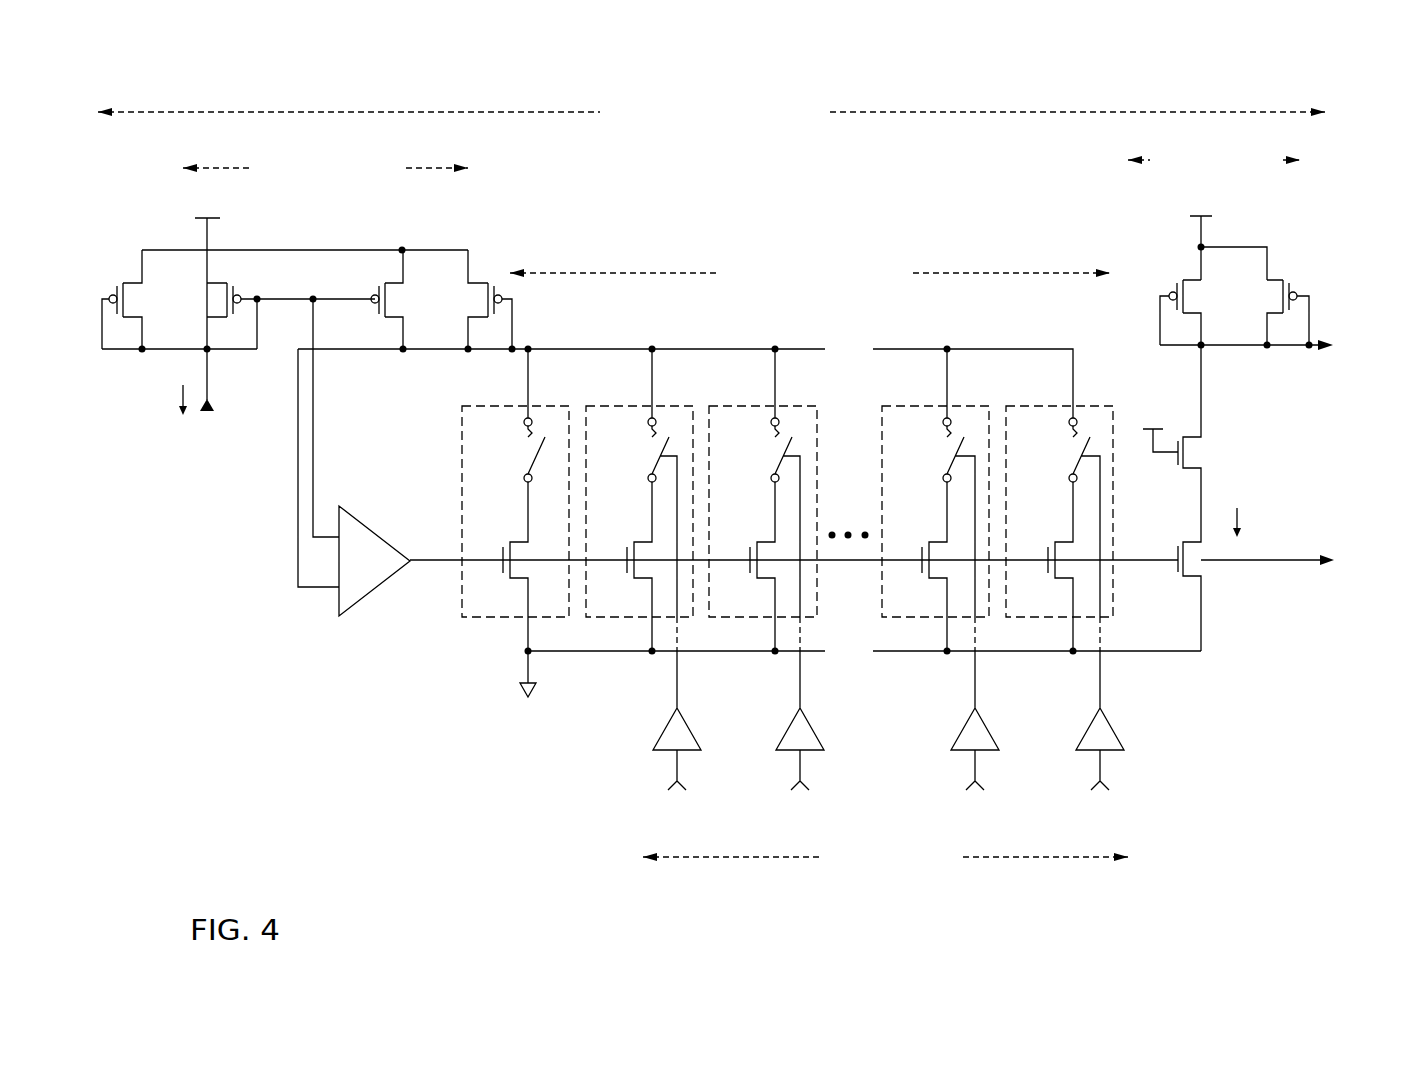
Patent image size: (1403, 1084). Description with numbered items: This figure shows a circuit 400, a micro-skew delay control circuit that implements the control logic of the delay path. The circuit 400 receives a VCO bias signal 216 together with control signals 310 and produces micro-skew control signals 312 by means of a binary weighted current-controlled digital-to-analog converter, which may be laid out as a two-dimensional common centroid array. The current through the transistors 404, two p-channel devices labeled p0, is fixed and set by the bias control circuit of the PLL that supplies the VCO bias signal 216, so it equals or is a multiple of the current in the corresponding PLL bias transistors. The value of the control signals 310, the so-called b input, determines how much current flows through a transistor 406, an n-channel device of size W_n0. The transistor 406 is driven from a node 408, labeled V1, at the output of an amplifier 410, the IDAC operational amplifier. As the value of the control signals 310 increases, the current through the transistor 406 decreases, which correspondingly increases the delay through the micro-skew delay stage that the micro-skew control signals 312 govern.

The circuit 400 is at (505, 835).
The transistors 404 is at (474, 240).
The VCO bias signal 216 is at (223, 418).
The amplifier 410 is at (368, 527).
The node 408 is at (452, 553).
The transistor 406 is at (533, 572).
The control signals 310 is at (617, 749).
The micro-skew control signals 312 is at (1340, 588).